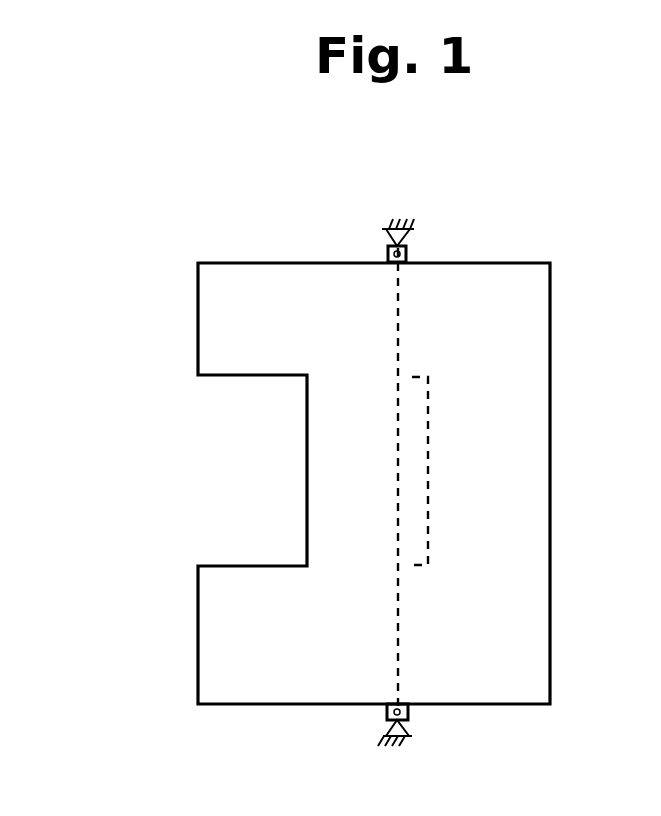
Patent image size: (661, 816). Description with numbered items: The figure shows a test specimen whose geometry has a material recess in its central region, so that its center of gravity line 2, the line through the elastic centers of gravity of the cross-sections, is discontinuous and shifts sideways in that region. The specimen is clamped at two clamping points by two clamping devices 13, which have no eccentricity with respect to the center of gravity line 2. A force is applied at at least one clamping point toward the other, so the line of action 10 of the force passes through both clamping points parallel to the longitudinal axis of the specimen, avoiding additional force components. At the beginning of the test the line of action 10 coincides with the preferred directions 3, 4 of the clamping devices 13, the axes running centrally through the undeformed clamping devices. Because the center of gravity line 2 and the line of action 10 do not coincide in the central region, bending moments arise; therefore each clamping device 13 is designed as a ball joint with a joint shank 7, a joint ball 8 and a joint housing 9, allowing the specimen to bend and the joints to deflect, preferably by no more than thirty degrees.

The center of gravity line 2 is at (427, 472).
The preferred direction 3 is at (268, 478).
The preferred direction 4 is at (268, 478).
The line of action 10 is at (398, 430).
The joint shank 7 is at (383, 231).
The joint ball 8 is at (384, 248).
The joint housing 9 is at (381, 259).
The clamping device 13 is at (407, 250).